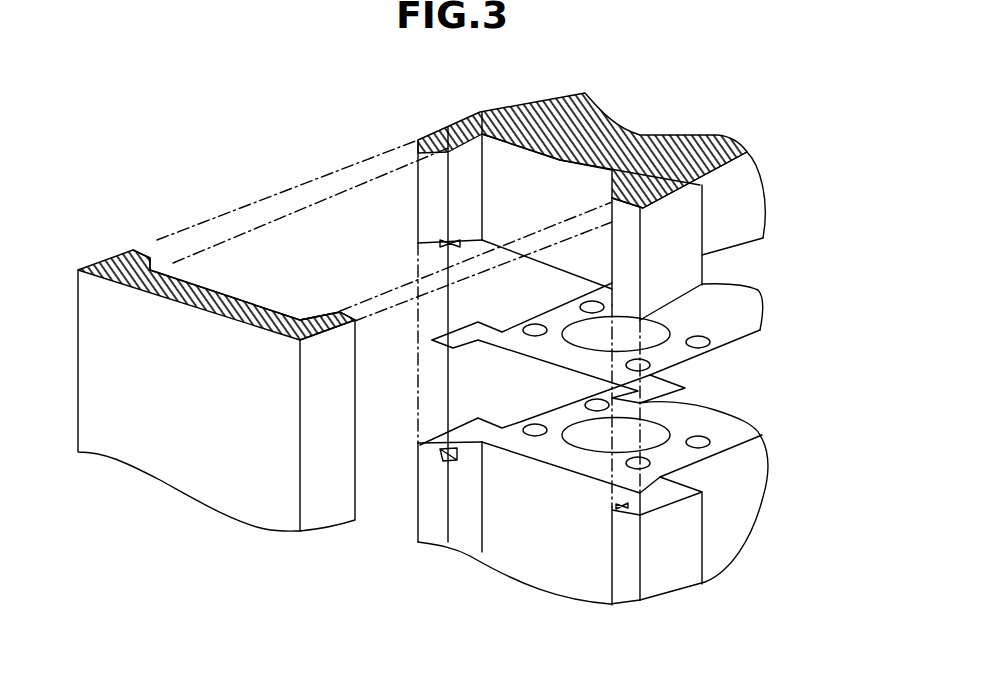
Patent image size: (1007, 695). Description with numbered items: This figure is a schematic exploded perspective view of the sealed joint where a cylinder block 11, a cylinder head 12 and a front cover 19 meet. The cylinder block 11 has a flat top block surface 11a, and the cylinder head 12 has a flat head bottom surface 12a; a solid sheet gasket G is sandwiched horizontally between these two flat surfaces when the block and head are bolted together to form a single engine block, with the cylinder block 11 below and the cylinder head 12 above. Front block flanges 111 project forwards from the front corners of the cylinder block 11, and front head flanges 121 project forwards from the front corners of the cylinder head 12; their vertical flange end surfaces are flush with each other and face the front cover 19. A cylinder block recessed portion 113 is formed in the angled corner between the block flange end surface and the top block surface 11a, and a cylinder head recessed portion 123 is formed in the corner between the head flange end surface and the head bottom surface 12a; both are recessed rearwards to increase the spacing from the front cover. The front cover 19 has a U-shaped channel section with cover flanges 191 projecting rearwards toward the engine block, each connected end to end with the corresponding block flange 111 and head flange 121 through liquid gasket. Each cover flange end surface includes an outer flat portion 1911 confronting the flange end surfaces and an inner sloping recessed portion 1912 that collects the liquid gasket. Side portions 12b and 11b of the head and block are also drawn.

The front cover 19 is at (77, 338).
The cover flange 191 is at (155, 268).
The flat portion 1911 is at (148, 250).
The recessed portion 1912 is at (156, 262).
The cylinder head 12 is at (747, 162).
The head bottom surface 12a is at (766, 245).
The side wall of upper block 12b is at (434, 126).
The front head flange 121 is at (790, 292).
The cylinder head recessed portion 123 is at (456, 245).
The sheet gasket G is at (512, 330).
The cylinder block 11 is at (521, 548).
The top block surface 11a is at (682, 458).
The side wall of lower block 11b is at (454, 434).
The front block flange 111 is at (418, 528).
The cylinder block recessed portion 113 is at (444, 452).